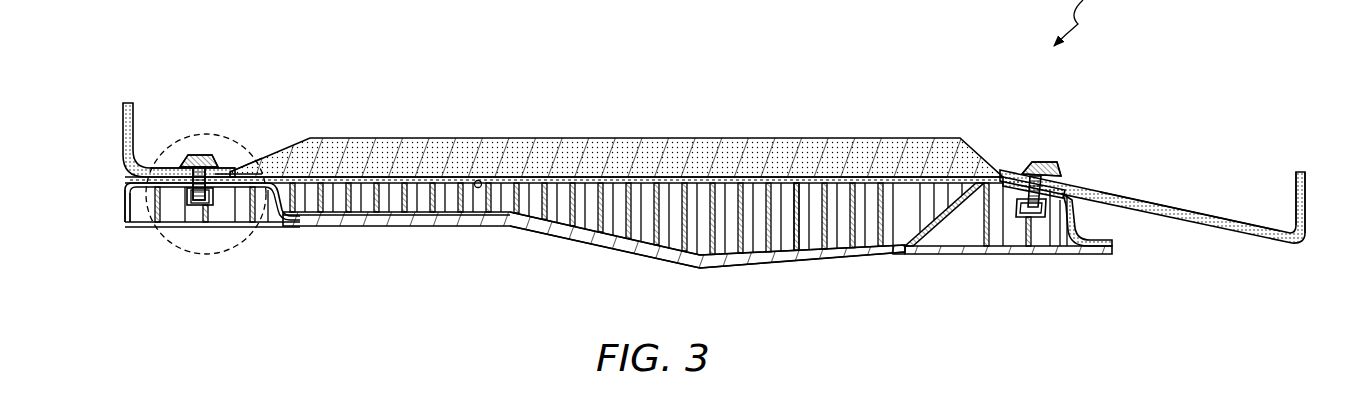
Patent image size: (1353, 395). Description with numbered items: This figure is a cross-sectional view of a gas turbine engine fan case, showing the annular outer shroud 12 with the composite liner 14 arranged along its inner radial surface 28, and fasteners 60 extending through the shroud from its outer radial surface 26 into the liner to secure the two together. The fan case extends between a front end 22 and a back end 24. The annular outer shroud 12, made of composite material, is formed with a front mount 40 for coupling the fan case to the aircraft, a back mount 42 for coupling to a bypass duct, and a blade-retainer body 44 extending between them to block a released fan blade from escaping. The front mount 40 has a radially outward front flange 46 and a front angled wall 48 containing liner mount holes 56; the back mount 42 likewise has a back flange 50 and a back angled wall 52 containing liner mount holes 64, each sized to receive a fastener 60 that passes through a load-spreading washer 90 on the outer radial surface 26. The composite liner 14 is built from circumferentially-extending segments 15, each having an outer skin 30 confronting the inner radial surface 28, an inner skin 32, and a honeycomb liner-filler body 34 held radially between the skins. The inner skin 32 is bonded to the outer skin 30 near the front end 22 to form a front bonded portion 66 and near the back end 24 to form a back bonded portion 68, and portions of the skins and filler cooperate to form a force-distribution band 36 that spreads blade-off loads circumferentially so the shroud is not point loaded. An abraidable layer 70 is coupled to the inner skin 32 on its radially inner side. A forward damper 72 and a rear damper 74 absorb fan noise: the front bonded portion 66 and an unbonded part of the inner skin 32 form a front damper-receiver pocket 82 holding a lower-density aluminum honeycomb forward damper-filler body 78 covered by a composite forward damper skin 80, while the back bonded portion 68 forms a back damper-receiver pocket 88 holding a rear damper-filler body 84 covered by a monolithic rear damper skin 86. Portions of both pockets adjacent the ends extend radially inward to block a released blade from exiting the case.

The annular outer shroud 12 is at (556, 114).
The composite liner 14 is at (782, 276).
The circumferentially-extending segment 15 is at (609, 260).
The front end 22 is at (114, 102).
The back end 24 is at (1316, 174).
The outer radial surface 26 is at (415, 138).
The inner radial surface 28 is at (480, 180).
The outer skin 30 is at (752, 185).
The inner skin 32 is at (896, 258).
The liner-filler body 34 is at (794, 200).
The force-distribution band 36 is at (512, 246).
The front mount 40 is at (189, 96).
The back mount 42 is at (1189, 164).
The blade-retainer body 44 is at (672, 148).
The front flange 46 is at (128, 125).
The front angled wall 48 is at (236, 172).
The back flange 50 is at (1292, 187).
The back angled wall 52 is at (1186, 217).
The liner mount hole 56 is at (230, 190).
The fastener 60 is at (205, 160).
The liner mount hole 64 is at (1062, 192).
The front bonded portion 66 is at (266, 176).
The back bonded portion 68 is at (1100, 220).
The abraidable layer 70 is at (420, 228).
The forward damper 72 is at (162, 240).
The rear damper 74 is at (1018, 258).
The forward damper-filler body 78 is at (212, 210).
The forward damper skin 80 is at (200, 222).
The front damper-receiver pocket 82 is at (148, 200).
The rear damper-filler body 84 is at (970, 222).
The rear damper skin 86 is at (993, 254).
The back damper-receiver pocket 88 is at (1068, 240).
The load-spreading washer 90 is at (188, 160).